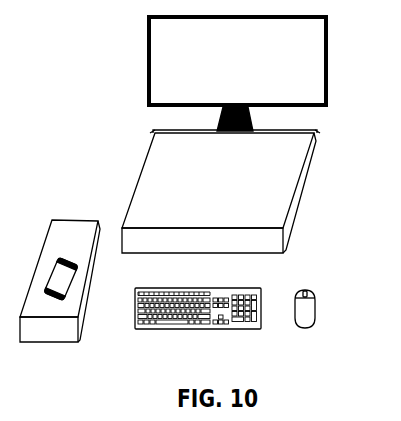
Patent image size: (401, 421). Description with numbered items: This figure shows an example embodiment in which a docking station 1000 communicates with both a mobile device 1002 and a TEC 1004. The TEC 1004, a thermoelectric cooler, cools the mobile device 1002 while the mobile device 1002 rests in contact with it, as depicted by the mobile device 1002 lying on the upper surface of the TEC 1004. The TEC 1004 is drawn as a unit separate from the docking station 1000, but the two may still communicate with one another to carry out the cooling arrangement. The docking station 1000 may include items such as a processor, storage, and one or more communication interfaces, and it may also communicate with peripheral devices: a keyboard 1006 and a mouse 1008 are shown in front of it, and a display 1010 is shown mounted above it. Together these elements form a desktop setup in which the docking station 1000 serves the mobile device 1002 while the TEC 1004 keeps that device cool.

The docking station 1000 is at (279, 225).
The mobile device 1002 is at (63, 260).
The TEC 1004 is at (65, 342).
The keyboard 1006 is at (249, 288).
The mouse 1008 is at (309, 291).
The display 1010 is at (316, 101).